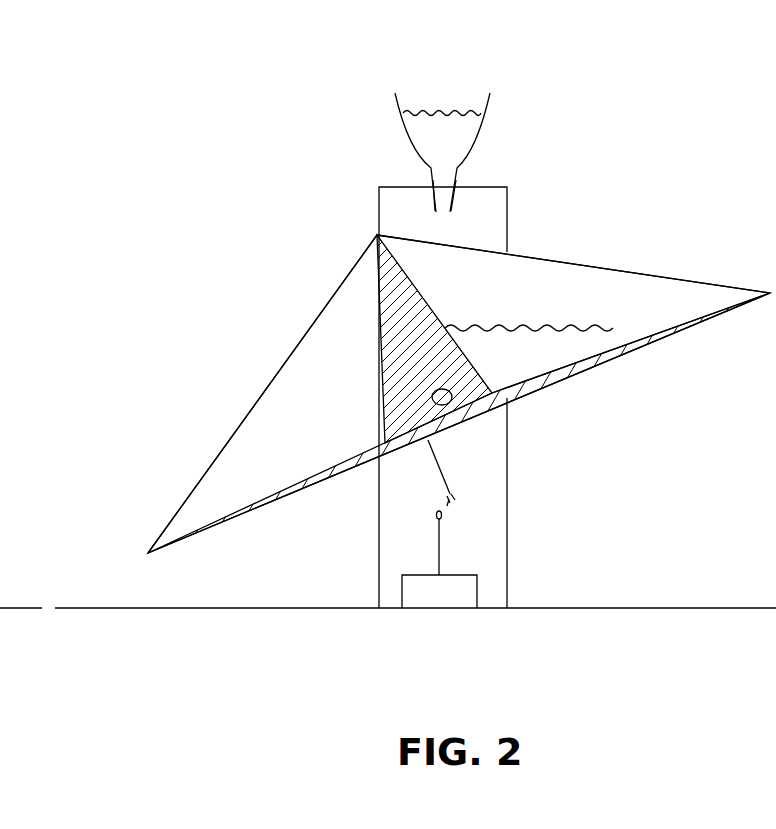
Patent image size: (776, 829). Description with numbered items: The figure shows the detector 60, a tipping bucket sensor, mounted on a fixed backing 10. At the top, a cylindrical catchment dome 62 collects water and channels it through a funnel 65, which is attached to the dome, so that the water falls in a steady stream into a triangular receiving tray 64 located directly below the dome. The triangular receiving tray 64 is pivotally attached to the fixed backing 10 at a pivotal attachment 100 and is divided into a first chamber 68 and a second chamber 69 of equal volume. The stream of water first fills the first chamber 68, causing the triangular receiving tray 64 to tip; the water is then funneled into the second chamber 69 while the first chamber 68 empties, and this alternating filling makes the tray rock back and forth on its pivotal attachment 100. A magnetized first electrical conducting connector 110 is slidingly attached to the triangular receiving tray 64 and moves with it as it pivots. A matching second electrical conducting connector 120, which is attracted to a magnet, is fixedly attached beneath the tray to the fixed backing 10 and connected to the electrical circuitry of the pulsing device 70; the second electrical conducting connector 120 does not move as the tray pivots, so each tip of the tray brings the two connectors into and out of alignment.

The fixed backing 10 is at (378, 208).
The detector 60 is at (234, 343).
The cylindrical catchment dome 62 is at (460, 138).
The triangular receiving tray 64 is at (402, 362).
The funnel 65 is at (443, 188).
The first chamber 68 is at (303, 398).
The second chamber 69 is at (572, 288).
The pulsing device 70 is at (477, 592).
The pivotal attachment 100 is at (452, 397).
The first electrical conducting connector 110 is at (445, 470).
The second electrical conducting connector 120 is at (440, 553).